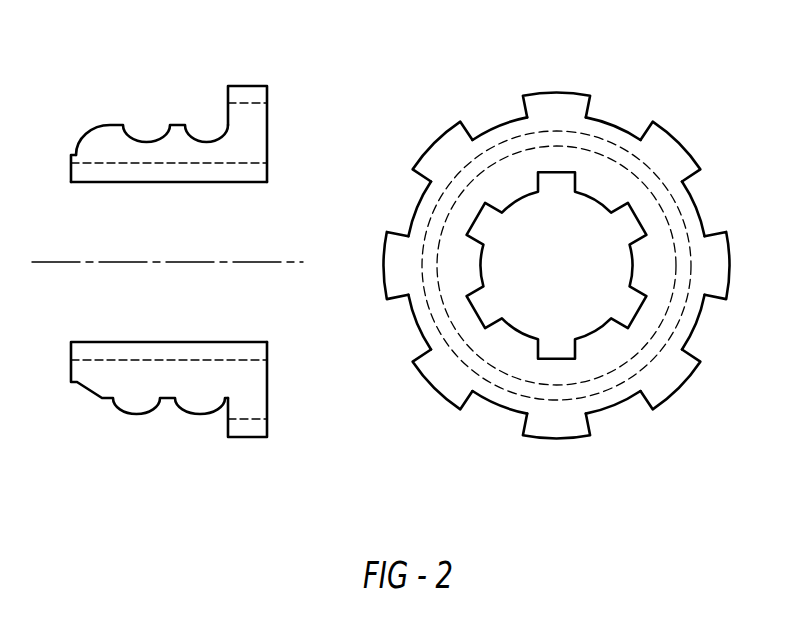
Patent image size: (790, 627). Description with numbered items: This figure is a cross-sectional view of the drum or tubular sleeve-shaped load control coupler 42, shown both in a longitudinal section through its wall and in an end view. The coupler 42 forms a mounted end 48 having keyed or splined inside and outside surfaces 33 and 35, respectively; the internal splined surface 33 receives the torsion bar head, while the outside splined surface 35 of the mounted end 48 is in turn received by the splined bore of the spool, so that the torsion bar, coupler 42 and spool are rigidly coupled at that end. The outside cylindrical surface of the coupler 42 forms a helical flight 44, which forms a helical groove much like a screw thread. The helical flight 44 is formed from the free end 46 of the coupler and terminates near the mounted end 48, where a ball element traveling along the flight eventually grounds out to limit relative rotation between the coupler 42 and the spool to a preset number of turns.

The keyed or splined inside surface 33 is at (632, 277).
The keyed or splined outside surface 35 is at (248, 437).
The load control coupler 42 is at (124, 148).
The helical flight 44 is at (138, 383).
The free end 46 is at (71, 167).
The mounted end 48 is at (247, 87).